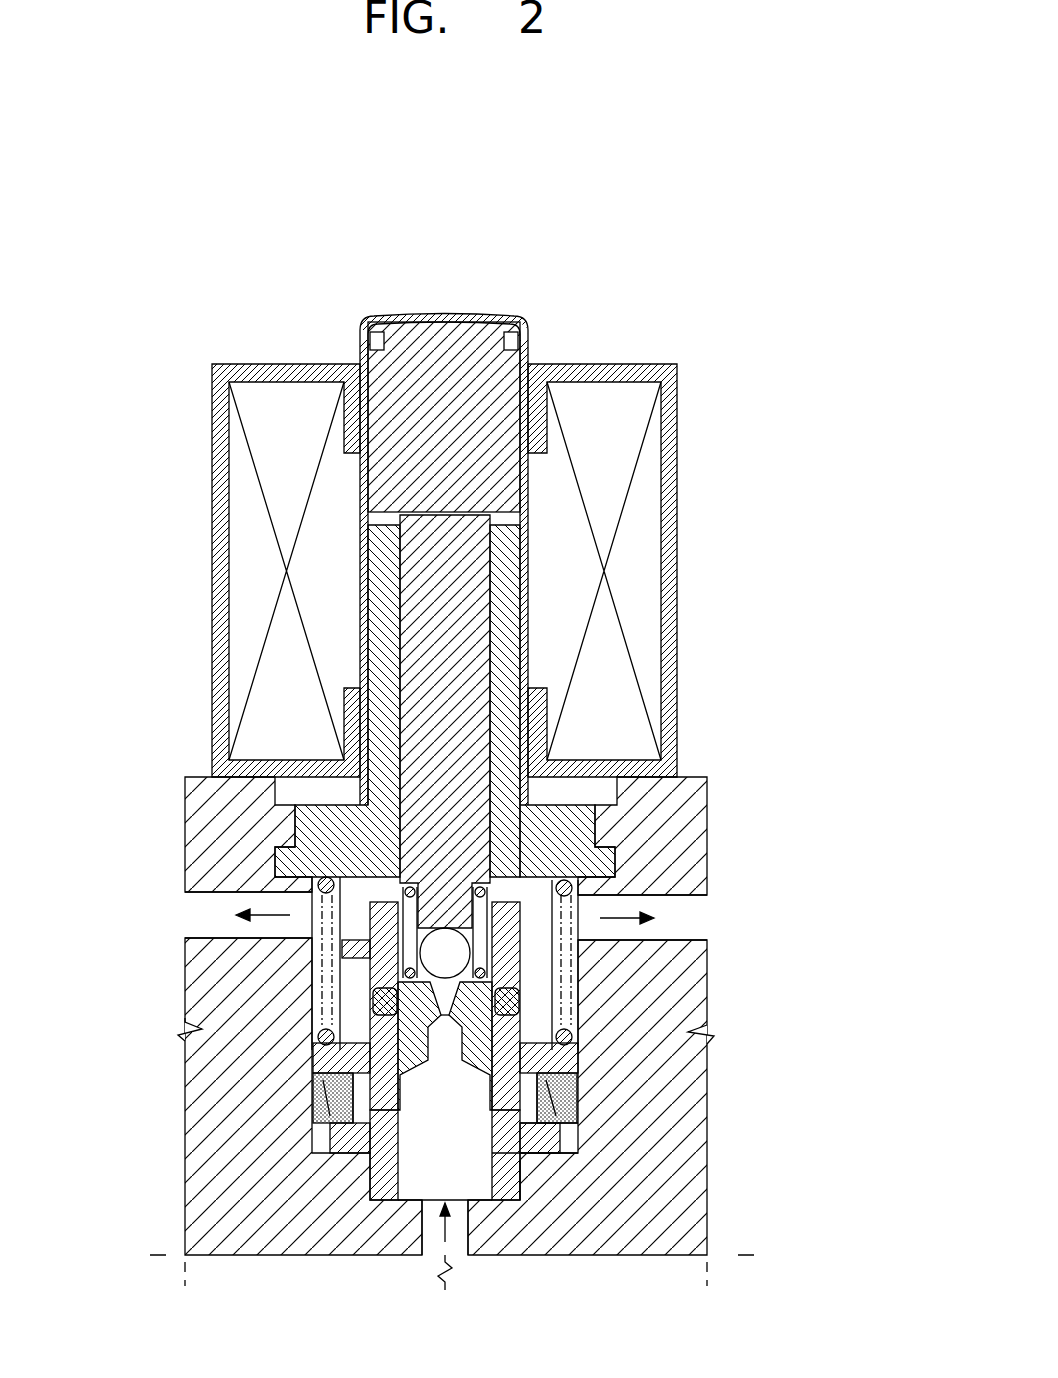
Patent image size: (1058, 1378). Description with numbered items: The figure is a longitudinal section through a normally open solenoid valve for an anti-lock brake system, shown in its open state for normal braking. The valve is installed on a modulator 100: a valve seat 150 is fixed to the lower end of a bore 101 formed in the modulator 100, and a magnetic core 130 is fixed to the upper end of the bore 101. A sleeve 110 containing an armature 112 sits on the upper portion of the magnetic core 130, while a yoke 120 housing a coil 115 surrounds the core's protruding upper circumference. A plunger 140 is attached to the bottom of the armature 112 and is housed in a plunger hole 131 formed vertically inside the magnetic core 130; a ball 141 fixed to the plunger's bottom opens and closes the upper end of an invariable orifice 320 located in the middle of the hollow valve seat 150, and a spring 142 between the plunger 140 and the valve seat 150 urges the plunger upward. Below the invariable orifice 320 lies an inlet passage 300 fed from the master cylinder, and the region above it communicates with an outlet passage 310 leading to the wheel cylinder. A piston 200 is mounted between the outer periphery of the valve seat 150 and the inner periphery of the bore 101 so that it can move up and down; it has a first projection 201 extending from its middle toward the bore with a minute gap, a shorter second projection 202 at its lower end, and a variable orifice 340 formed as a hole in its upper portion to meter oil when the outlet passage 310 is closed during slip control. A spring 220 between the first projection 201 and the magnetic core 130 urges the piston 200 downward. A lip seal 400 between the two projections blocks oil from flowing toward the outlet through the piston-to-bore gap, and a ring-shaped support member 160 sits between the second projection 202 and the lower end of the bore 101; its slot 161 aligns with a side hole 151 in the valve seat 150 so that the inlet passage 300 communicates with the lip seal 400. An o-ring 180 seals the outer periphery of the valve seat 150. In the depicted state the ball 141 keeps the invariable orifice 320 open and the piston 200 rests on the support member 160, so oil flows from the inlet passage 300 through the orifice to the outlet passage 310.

The modulator 100 is at (225, 1090).
The bore 101 is at (580, 998).
The sleeve 110 is at (445, 316).
The armature 112 is at (398, 368).
The coil 115 is at (645, 592).
The yoke 120 is at (672, 505).
The magnetic core 130 is at (330, 803).
The plunger hole 131 is at (405, 650).
The plunger 140 is at (418, 693).
The ball 141 is at (460, 962).
The spring 142 is at (603, 853).
The valve seat 150 is at (380, 1188).
The side hole 151 is at (533, 1137).
The support member 160 is at (313, 1145).
The slot 161 is at (520, 1155).
The o-ring 180 is at (367, 996).
The piston 200 is at (540, 1160).
The first projection 201 is at (552, 1060).
The second projection 202 is at (575, 1140).
The spring 220 is at (558, 918).
The inlet passage 300 is at (438, 1150).
The outlet passage 310 is at (352, 908).
The invariable orifice 320 is at (387, 1017).
The variable orifice 340 is at (385, 955).
The lip seal 400 is at (568, 1090).